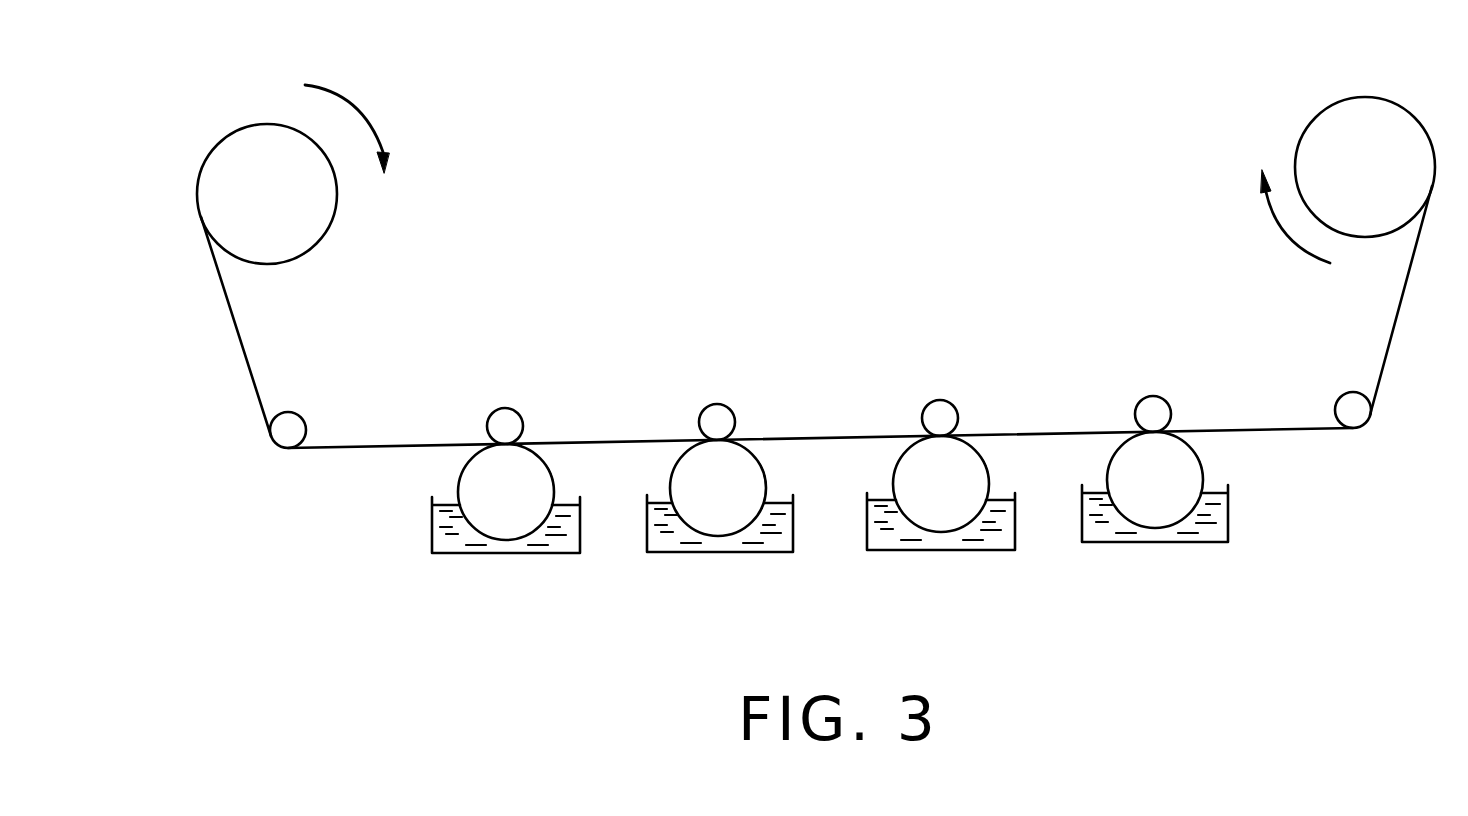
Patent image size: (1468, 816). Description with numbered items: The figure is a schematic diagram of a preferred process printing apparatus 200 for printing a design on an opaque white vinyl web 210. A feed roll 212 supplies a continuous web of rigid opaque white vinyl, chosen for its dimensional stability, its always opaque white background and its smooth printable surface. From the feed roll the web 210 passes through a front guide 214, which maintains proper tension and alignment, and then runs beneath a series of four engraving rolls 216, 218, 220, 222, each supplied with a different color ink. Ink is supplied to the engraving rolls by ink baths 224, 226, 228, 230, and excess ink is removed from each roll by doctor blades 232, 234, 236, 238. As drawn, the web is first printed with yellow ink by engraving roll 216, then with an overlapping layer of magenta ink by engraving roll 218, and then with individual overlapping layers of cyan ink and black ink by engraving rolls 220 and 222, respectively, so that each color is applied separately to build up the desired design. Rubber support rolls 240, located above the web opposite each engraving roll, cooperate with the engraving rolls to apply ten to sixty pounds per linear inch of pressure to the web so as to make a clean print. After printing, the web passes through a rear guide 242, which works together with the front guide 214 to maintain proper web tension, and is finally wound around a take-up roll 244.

The process printing apparatus 200 is at (1007, 179).
The opaque white vinyl web 210 is at (1403, 292).
The feed roll 212 is at (1308, 130).
The front guide 214 is at (1356, 392).
The engraving roll 216 is at (1108, 470).
The engraving roll 218 is at (894, 474).
The engraving roll 220 is at (672, 478).
The engraving roll 222 is at (462, 468).
The ink bath 224 is at (1195, 525).
The ink bath 226 is at (995, 530).
The ink bath 228 is at (780, 545).
The ink bath 230 is at (562, 546).
The doctor blade 232 is at (548, 468).
The doctor blade 234 is at (760, 464).
The doctor blade 236 is at (983, 460).
The doctor blade 238 is at (1197, 456).
The rubber support rolls 240 is at (513, 410).
The rear guide 242 is at (300, 413).
The take-up roll 244 is at (338, 213).